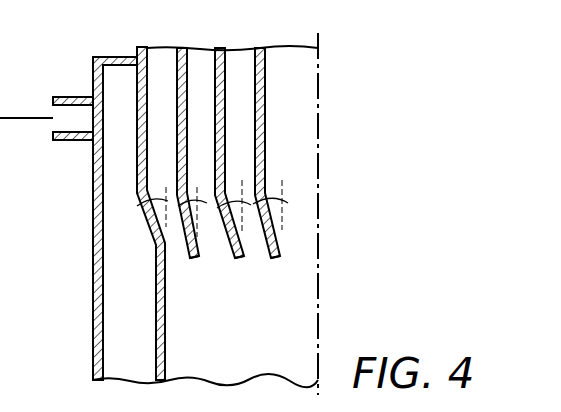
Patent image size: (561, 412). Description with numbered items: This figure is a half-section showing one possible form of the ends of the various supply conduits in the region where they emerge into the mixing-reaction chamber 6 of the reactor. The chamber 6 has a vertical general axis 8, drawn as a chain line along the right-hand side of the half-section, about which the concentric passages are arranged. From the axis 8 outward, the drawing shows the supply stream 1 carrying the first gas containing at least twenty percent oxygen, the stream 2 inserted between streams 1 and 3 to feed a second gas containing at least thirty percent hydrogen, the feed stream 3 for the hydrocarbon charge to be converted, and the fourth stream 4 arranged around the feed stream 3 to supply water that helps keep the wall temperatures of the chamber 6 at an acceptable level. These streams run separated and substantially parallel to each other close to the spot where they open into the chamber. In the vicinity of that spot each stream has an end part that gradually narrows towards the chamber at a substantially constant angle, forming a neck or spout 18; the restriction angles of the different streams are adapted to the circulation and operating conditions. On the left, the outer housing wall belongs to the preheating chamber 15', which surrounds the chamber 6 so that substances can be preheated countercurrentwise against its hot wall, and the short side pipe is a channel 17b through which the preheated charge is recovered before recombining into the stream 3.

The supply stream 1 is at (290, 67).
The stream 2 is at (240, 67).
The feed stream 3 is at (200, 67).
The fourth stream 4 is at (158, 67).
The mixing-reaction chamber 6 is at (285, 361).
The vertical general axis 8 is at (320, 65).
The preheating chamber 15' is at (88, 218).
The channel 17b is at (86, 118).
The neck or spout 18 is at (295, 248).